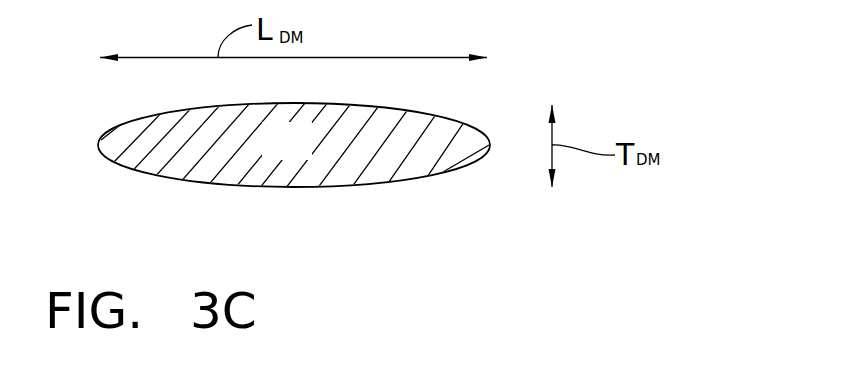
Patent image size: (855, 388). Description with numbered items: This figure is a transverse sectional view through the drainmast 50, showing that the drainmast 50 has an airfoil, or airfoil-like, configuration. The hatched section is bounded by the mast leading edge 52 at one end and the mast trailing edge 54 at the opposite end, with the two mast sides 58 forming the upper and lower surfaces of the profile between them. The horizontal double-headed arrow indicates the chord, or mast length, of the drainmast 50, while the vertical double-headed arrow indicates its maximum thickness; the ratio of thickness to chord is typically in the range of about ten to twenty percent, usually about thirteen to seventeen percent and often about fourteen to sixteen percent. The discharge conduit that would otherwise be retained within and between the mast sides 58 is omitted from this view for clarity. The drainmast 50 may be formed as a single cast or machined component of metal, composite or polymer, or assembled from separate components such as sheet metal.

The drainmast 50 is at (306, 156).
The mast leading edge 52 is at (86, 161).
The mast trailing edge 54 is at (496, 161).
The mast sides 58 is at (356, 97).